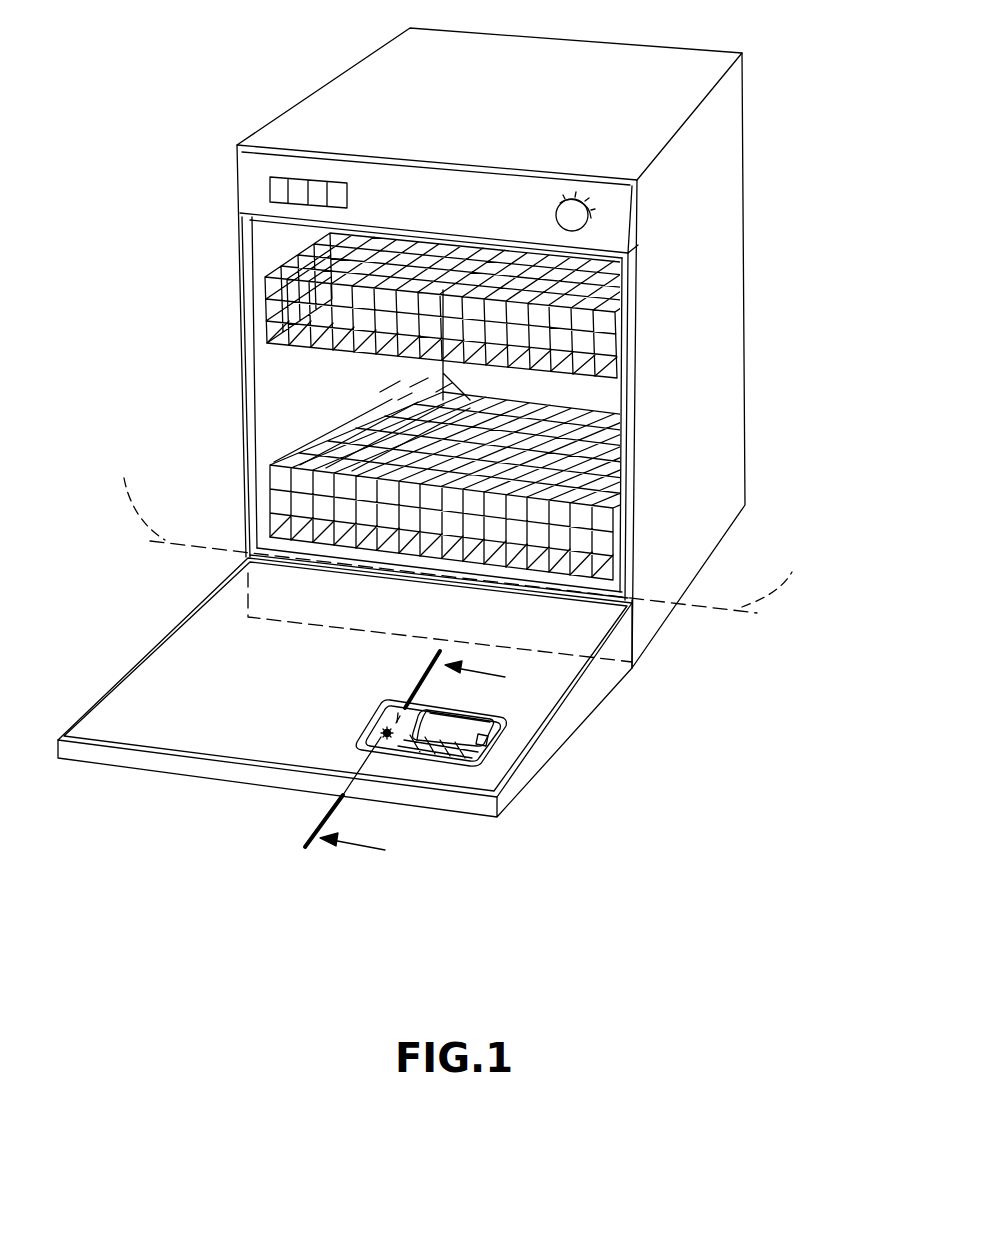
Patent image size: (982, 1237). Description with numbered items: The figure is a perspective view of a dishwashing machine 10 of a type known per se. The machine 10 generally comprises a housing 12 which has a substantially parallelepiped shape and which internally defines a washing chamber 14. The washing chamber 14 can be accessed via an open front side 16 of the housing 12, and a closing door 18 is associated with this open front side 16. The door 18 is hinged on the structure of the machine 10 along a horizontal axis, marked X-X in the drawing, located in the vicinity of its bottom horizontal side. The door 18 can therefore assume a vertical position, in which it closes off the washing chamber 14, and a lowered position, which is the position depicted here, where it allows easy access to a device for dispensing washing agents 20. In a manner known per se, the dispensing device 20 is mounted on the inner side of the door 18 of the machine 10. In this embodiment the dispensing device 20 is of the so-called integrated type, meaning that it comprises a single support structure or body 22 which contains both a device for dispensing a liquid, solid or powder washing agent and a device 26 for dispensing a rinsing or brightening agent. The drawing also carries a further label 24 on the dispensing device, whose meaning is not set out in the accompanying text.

The dishwashing machine 10 is at (198, 288).
The housing 12 is at (703, 337).
The washing chamber 14 is at (257, 353).
The open front side 16 is at (283, 413).
The closing door 18 is at (178, 683).
The device for dispensing washing agents 20 is at (490, 755).
The support structure or body 22 is at (455, 765).
The lid 24 is at (462, 735).
The device for dispensing a rinsing or brightening agent 26 is at (392, 745).